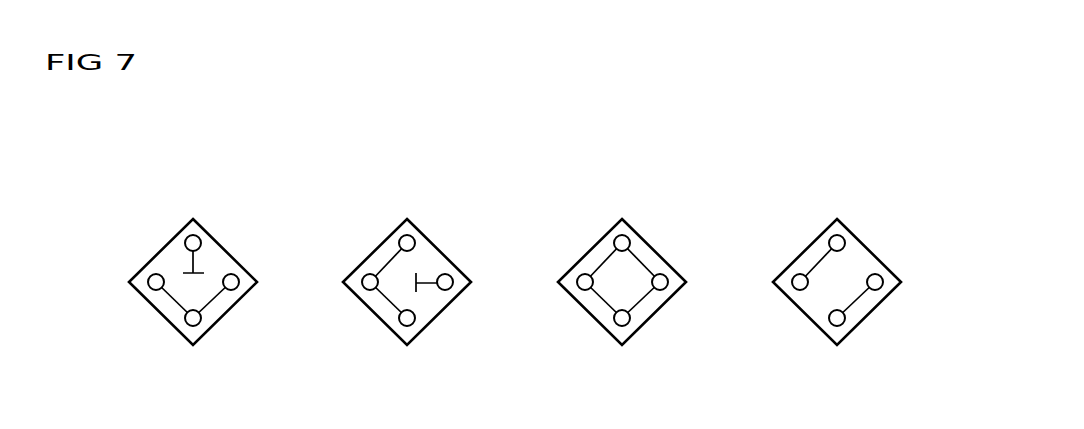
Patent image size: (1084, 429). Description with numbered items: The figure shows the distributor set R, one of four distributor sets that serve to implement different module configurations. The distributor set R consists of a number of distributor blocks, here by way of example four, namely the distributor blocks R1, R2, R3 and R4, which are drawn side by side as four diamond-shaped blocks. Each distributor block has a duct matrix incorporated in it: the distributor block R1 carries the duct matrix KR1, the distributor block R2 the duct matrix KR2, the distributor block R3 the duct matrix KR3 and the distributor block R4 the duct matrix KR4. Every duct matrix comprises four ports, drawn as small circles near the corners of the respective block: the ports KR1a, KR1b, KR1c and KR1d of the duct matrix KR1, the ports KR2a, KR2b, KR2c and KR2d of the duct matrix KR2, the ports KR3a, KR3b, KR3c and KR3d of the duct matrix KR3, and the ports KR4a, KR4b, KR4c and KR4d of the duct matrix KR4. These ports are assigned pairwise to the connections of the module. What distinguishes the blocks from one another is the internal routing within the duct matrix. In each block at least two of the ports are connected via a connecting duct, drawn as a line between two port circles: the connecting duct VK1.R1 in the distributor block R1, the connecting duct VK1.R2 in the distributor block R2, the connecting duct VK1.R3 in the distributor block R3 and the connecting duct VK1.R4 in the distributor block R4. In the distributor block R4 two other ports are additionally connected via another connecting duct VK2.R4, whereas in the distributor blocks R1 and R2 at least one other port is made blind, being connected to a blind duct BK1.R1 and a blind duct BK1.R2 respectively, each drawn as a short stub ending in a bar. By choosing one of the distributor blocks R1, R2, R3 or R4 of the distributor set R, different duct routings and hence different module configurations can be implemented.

The distributor set R is at (284, 124).
The distributor block R1 is at (180, 223).
The distributor block R2 is at (472, 277).
The distributor block R3 is at (687, 277).
The distributor block R4 is at (887, 266).
The duct matrix KR1 is at (152, 304).
The duct matrix KR2 is at (376, 320).
The duct matrix KR3 is at (596, 320).
The duct matrix KR4 is at (818, 282).
The port KR1a is at (197, 214).
The port KR1b is at (130, 284).
The port KR1c is at (197, 348).
The port KR1d is at (231, 255).
The port KR2a is at (411, 214).
The port KR2b is at (352, 277).
The port KR2c is at (411, 348).
The port KR2d is at (445, 255).
The port KR3a is at (626, 214).
The port KR3b is at (584, 262).
The port KR3c is at (626, 348).
The port KR3d is at (661, 265).
The port KR4a is at (841, 214).
The port KR4b is at (799, 263).
The port KR4c is at (841, 348).
The port KR4d is at (872, 266).
The blind duct BK1.R1 is at (191, 265).
The blind duct BK1.R2 is at (428, 284).
The connecting duct VK1.R1 is at (209, 305).
The connecting duct VK1.R2 is at (388, 240).
The connecting duct VK1.R3 is at (643, 304).
The connecting duct VK1.R4 is at (822, 250).
The connecting duct VK2.R4 is at (849, 304).